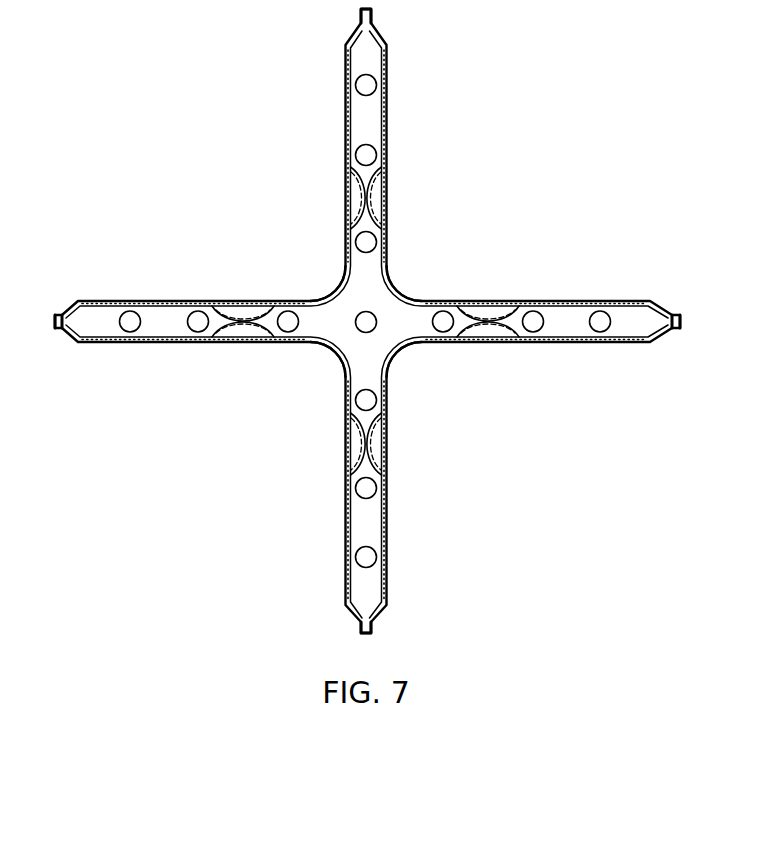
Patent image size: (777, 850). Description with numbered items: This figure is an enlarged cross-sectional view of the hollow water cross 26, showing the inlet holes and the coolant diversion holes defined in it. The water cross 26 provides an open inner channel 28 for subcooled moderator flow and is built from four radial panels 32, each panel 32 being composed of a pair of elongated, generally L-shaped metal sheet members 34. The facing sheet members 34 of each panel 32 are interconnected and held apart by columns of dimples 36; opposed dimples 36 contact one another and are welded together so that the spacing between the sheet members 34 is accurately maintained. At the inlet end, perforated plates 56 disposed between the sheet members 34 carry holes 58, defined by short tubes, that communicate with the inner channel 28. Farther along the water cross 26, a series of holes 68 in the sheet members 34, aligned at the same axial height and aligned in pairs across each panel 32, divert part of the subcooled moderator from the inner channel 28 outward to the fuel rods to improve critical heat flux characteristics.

The water cross 26 is at (537, 196).
The inner channel 28 is at (334, 331).
The radial panel 32 is at (388, 108).
The sheet member 34 is at (384, 52).
The dimple 36 is at (368, 196).
The perforated plate 56 is at (360, 52).
The hole 58 is at (371, 94).
The hole 68 is at (349, 240).